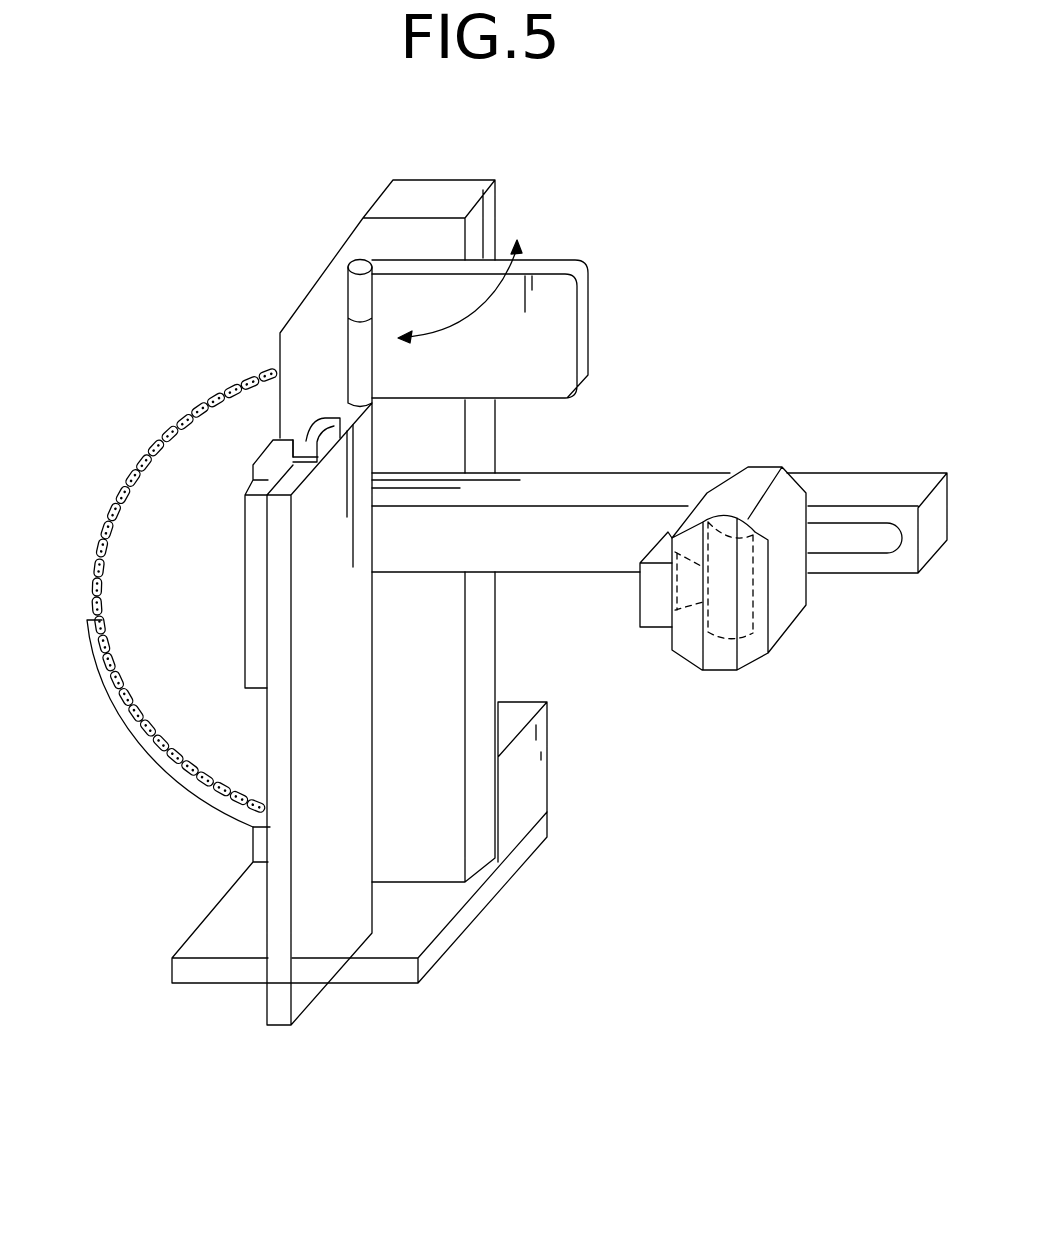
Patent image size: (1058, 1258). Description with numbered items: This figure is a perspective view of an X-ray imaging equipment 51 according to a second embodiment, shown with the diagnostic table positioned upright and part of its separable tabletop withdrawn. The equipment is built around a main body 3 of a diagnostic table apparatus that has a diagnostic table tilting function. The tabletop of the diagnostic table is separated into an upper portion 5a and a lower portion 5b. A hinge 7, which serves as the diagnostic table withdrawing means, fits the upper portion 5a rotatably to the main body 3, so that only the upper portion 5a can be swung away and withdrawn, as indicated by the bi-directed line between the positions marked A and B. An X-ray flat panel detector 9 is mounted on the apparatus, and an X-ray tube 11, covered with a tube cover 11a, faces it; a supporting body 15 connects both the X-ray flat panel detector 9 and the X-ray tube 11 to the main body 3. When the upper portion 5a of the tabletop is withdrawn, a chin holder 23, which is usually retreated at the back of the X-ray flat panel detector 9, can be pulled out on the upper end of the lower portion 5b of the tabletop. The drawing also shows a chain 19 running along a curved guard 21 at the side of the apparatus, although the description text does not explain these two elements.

The main body 3 is at (318, 302).
The upper portion 5a is at (560, 266).
The lower portion 5b is at (278, 940).
The hinge 7 is at (357, 268).
The X-ray flat panel detector 9 is at (243, 562).
The X-ray tube 11 is at (722, 638).
The tube cover 11a is at (790, 630).
The supporting body 15 is at (669, 475).
The chain 19 is at (147, 663).
The chain guard 21 is at (217, 797).
The chin holder 23 is at (320, 420).
The X-ray imaging equipment 51 is at (628, 887).